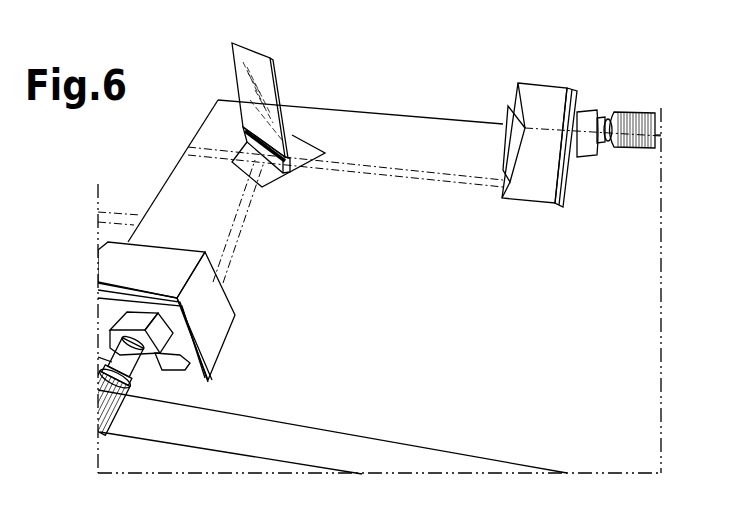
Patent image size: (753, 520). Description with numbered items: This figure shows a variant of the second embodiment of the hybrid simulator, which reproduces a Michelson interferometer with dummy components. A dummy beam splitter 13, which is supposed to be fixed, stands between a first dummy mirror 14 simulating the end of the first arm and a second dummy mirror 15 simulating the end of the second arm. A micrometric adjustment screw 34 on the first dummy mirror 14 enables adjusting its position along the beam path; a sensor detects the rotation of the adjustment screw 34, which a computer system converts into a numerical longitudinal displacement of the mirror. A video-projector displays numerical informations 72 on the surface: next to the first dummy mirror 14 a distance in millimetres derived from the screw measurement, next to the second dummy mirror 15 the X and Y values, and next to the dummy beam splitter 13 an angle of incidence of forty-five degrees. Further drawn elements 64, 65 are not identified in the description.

The dummy beam splitter 13 is at (278, 80).
The first dummy mirror 14 is at (510, 143).
The second dummy mirror 15 is at (233, 283).
The micrometric adjustment screw 34 is at (610, 117).
The reflected light beam 64 is at (407, 171).
The incident light beam 65 is at (238, 215).
The numerical informations 72 is at (349, 199).